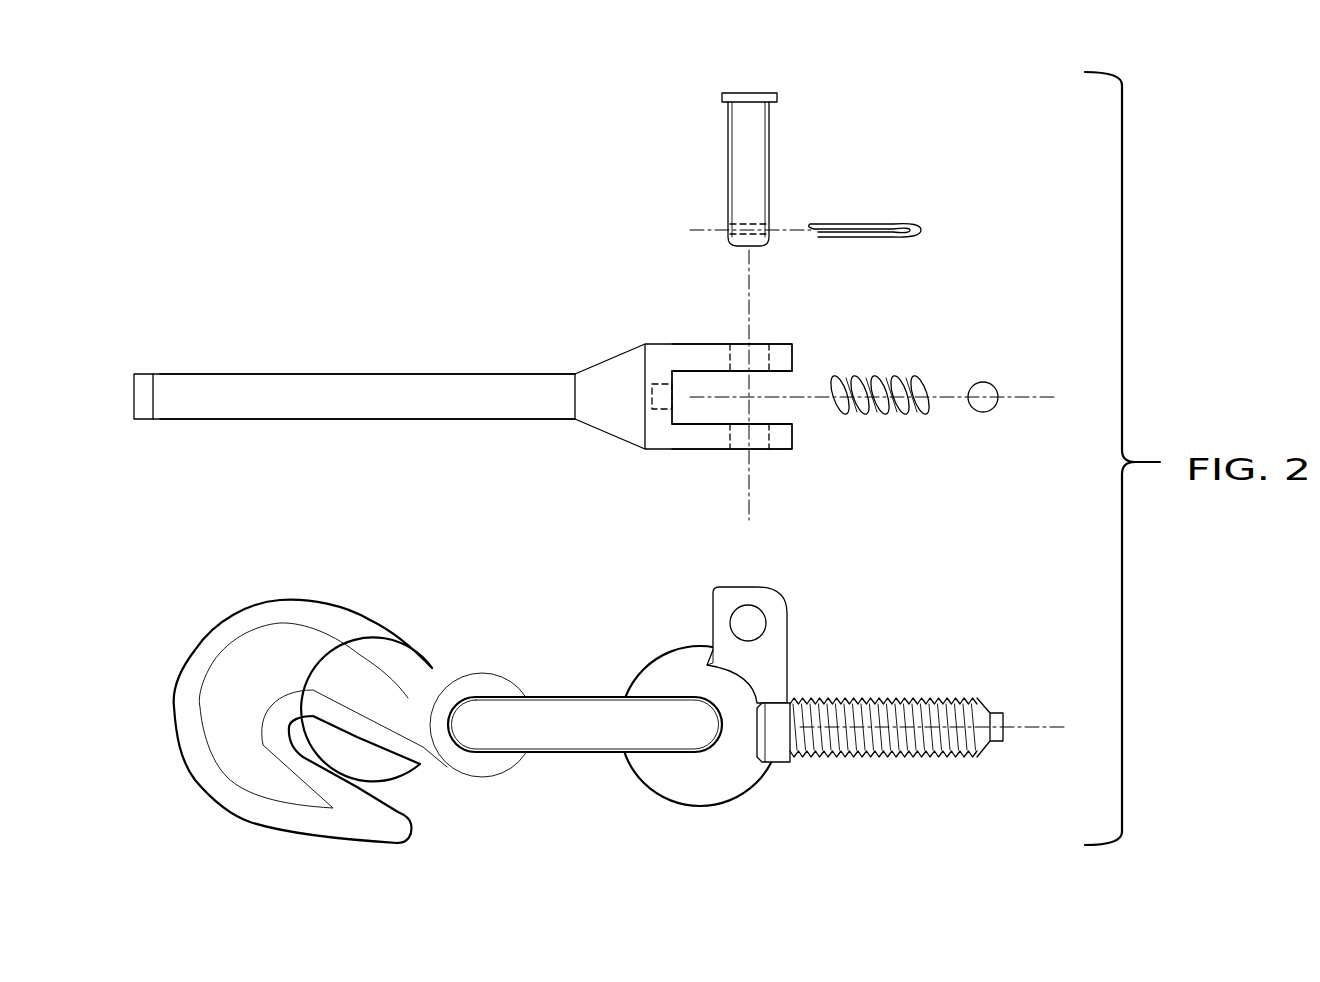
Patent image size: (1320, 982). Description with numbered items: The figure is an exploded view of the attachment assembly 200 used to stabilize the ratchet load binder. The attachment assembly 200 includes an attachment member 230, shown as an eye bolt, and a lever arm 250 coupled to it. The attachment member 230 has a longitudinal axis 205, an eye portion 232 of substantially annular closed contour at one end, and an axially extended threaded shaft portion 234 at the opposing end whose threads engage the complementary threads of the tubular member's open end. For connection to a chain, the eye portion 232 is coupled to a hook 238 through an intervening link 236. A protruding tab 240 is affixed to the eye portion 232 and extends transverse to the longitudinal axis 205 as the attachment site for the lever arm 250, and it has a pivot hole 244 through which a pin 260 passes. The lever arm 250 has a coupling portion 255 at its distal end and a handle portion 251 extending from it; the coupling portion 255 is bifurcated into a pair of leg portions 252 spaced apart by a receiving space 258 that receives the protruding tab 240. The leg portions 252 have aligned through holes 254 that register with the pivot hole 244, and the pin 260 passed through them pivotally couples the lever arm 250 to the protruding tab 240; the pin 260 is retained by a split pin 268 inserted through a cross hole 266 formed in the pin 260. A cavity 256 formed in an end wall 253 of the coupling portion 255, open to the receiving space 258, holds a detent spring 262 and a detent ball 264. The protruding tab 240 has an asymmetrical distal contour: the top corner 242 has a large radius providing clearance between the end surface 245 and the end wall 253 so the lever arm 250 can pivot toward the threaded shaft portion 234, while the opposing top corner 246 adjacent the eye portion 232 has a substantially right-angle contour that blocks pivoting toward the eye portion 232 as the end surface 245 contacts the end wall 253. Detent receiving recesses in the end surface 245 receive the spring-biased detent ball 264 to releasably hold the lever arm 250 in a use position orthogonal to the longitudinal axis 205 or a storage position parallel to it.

The attachment assembly 200 is at (330, 148).
The longitudinal axis 205 is at (1020, 745).
The attachment member 230 is at (780, 765).
The eye portion 232 is at (632, 668).
The threaded shaft portion 234 is at (920, 698).
The intervening link 236 is at (575, 753).
The hook 238 is at (343, 605).
The protruding tab 240 is at (768, 668).
The top corner 242 is at (773, 592).
The pivot hole 244 is at (752, 622).
The end surface 245 is at (745, 586).
The top corner 246 is at (712, 590).
The lever arm 250 is at (295, 374).
The handle portion 251 is at (390, 392).
The leg portions 252 is at (663, 344).
The end wall 253 is at (672, 404).
The through holes 254 is at (760, 344).
The coupling portion 255 is at (642, 452).
The cavity 256 is at (656, 382).
The receiving space 258 is at (707, 383).
The pin 260 is at (768, 146).
The detent spring 262 is at (876, 377).
The detent ball 264 is at (985, 382).
The cross hole 266 is at (725, 228).
The split pin 268 is at (880, 224).